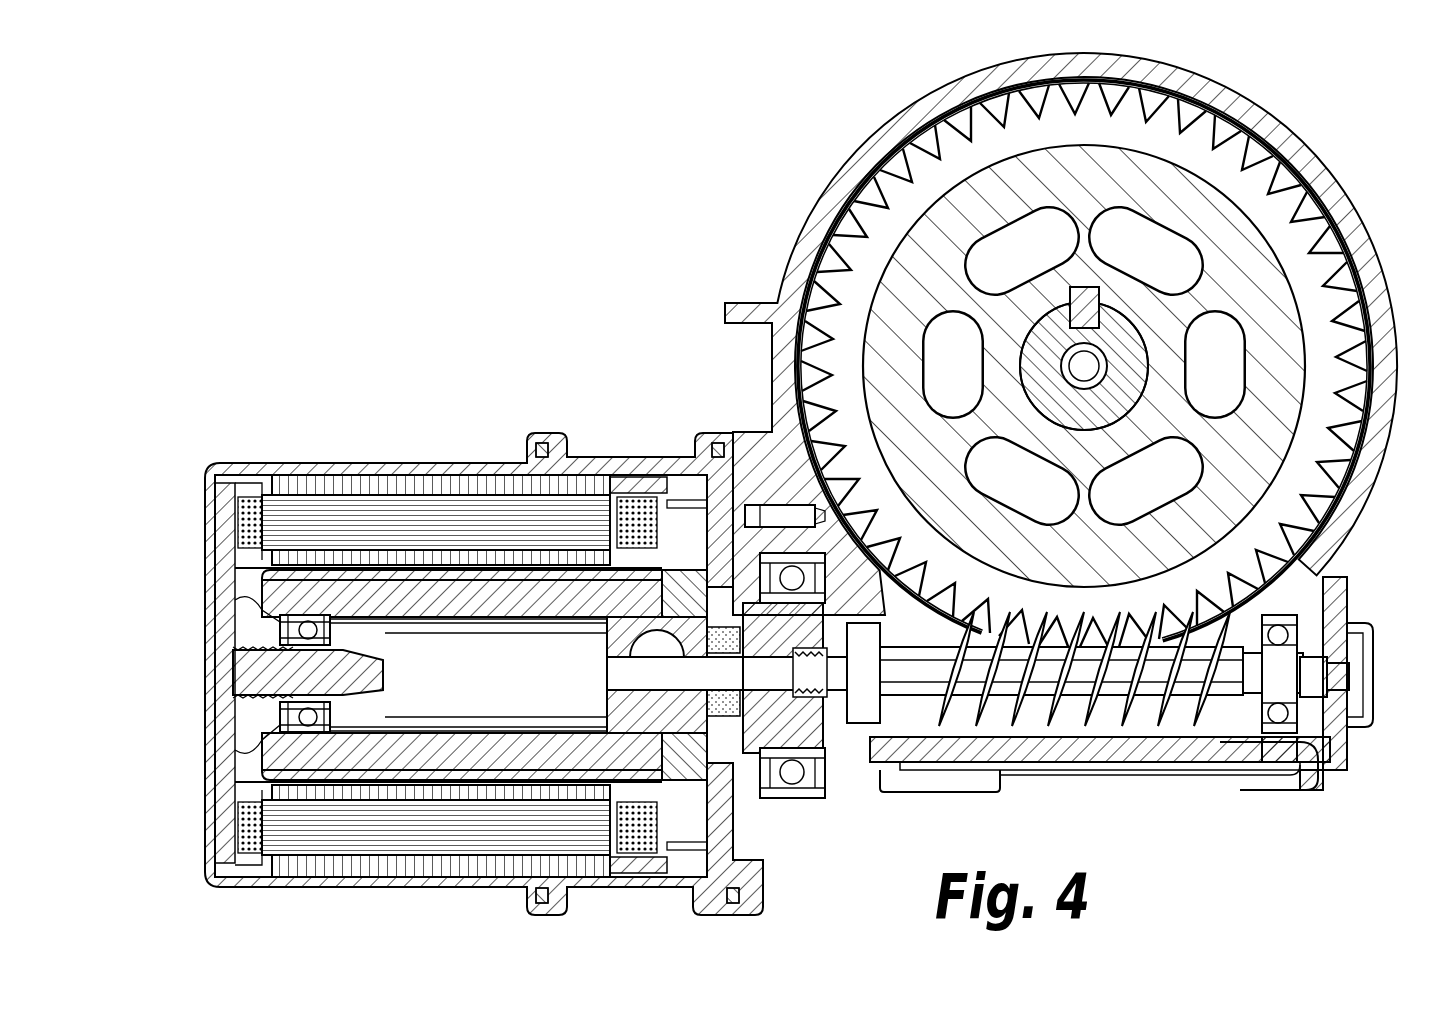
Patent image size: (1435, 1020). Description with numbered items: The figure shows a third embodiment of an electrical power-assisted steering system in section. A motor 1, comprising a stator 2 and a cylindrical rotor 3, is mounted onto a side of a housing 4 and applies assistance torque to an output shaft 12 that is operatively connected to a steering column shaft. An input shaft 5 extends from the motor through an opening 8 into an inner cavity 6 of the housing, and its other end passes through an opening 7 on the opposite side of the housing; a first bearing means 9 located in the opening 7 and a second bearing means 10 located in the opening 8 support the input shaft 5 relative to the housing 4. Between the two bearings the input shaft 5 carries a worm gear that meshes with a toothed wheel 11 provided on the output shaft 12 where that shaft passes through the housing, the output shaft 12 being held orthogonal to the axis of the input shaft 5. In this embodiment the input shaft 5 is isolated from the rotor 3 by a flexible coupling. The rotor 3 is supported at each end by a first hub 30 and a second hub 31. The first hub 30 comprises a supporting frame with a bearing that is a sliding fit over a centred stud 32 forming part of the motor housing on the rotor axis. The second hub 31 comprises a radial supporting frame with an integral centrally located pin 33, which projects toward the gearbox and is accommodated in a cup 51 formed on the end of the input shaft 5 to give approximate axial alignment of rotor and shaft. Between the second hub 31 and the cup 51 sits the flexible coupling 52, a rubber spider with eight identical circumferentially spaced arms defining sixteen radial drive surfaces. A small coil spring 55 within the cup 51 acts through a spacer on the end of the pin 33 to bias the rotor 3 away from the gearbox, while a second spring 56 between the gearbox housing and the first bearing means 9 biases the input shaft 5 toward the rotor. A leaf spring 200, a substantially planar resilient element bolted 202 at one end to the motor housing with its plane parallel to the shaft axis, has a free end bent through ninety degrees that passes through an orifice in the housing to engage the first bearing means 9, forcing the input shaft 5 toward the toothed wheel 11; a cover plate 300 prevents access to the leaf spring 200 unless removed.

The motor 1 is at (365, 893).
The stator 2 is at (512, 855).
The rotor 3 is at (262, 760).
The housing 4 is at (438, 463).
The input shaft 5 is at (926, 688).
The inner cavity 6 is at (1212, 730).
The opening 7 is at (1330, 582).
The opening 8 is at (800, 800).
The first bearing means 9 is at (1245, 782).
The second bearing means 10 is at (795, 580).
The toothed wheel 11 is at (1330, 245).
The output shaft 12 is at (1116, 320).
The first hub 30 is at (285, 628).
The second hub 31 is at (612, 490).
The centred stud 32 is at (233, 655).
The pin 33 is at (606, 668).
The cup 51 is at (745, 800).
The flexible coupling 52 is at (740, 512).
The coil spring 55 is at (800, 700).
The second spring 56 is at (1312, 718).
The leaf spring 200 is at (1143, 772).
The bolt 202 is at (1297, 757).
The cover plate 300 is at (1234, 783).